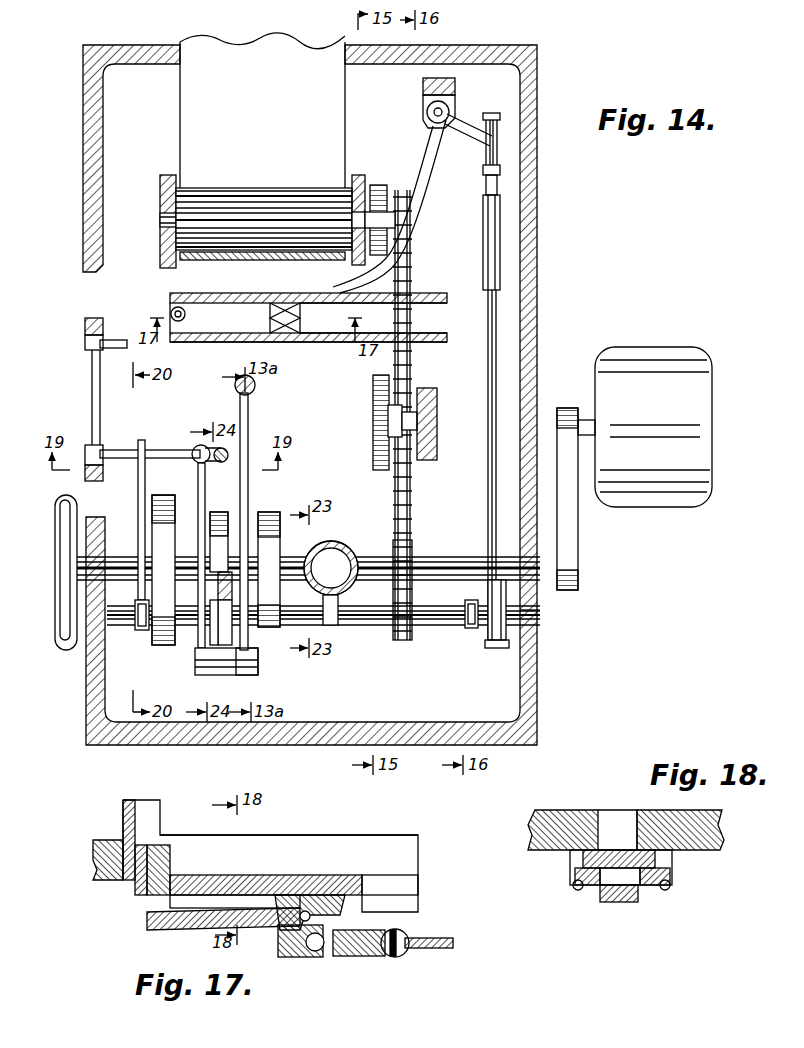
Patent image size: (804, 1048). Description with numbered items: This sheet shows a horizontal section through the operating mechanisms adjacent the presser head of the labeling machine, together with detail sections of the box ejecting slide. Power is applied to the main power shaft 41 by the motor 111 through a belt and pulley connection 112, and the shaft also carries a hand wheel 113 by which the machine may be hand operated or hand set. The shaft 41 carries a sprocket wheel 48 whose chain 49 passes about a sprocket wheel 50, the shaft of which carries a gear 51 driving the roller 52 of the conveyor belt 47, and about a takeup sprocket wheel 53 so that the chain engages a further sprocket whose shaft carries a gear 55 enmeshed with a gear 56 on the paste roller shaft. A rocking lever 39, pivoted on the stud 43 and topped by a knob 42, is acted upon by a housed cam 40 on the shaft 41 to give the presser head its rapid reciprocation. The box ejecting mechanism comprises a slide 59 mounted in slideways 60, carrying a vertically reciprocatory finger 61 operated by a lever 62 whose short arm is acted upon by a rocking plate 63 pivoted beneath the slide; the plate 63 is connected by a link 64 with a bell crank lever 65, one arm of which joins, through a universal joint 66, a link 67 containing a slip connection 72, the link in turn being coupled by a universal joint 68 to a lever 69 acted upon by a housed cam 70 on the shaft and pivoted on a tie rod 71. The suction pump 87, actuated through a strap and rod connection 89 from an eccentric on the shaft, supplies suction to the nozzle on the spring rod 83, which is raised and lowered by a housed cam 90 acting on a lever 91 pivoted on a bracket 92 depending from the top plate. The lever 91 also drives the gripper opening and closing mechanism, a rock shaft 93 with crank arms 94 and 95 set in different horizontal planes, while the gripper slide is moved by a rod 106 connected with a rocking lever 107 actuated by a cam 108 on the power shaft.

In FIG. 14, the conveyor belt 47 is at (236, 42).
In FIG. 14, the roller 52 is at (236, 190).
In FIG. 14, the gear 51 is at (366, 183).
In FIG. 14, the sprocket wheel 50 is at (388, 193).
In FIG. 14, the chain 49 is at (412, 360).
In FIG. 14, the bell crank lever 65 is at (418, 182).
In FIG. 17, the bell crank lever 65 is at (430, 938).
In FIG. 14, the universal joint 66 is at (500, 142).
In FIG. 14, the slip connection 72 is at (500, 215).
In FIG. 14, the link 67 is at (500, 297).
In FIG. 14, the slide 59 is at (218, 296).
In FIG. 17, the slide 59 is at (210, 876).
In FIG. 18, the slide 59 is at (606, 848).
In FIG. 14, the slideways 60 is at (330, 340).
In FIG. 18, the slideways 60 is at (648, 885).
In FIG. 14, the finger 61 is at (171, 311).
In FIG. 17, the finger 61 is at (135, 890).
In FIG. 14, the lever 62 is at (178, 342).
In FIG. 17, the lever 62 is at (170, 930).
In FIG. 18, the lever 62 is at (618, 902).
In FIG. 14, the rock shaft 93 is at (92, 366).
In FIG. 14, the crank arm 95 is at (118, 340).
In FIG. 14, the crank arm 94 is at (118, 450).
In FIG. 14, the spring rod 83 is at (214, 447).
In FIG. 14, the lever 91 is at (198, 476).
In FIG. 14, the rod 106 is at (138, 494).
In FIG. 14, the rocking lever 107 is at (138, 630).
In FIG. 14, the cam 108 is at (162, 643).
In FIG. 14, the housed cam 90 is at (216, 512).
In FIG. 14, the bracket 92 is at (225, 635).
In FIG. 14, the housed cam 40 is at (268, 512).
In FIG. 14, the rocking lever 39 is at (250, 431).
In FIG. 14, the knob 42 is at (256, 383).
In FIG. 14, the stud 43 is at (258, 670).
In FIG. 14, the main power shaft 41 is at (428, 558).
In FIG. 14, the tie rod 71 is at (440, 628).
In FIG. 14, the suction pump 87 is at (322, 542).
In FIG. 14, the strap and rod connection 89 is at (330, 626).
In FIG. 14, the sprocket wheel 48 is at (412, 600).
In FIG. 14, the lever 69 is at (470, 628).
In FIG. 14, the housed cam 70 is at (496, 648).
In FIG. 14, the universal joint 68 is at (538, 624).
In FIG. 14, the gear 55 is at (373, 452).
In FIG. 14, the gear 56 is at (373, 430).
In FIG. 14, the takeup sprocket wheel 53 is at (437, 447).
In FIG. 14, the hand wheel 113 is at (58, 510).
In FIG. 14, the motor 111 is at (652, 508).
In FIG. 14, the belt and pulley connection 112 is at (578, 546).
In FIG. 17, the rocking plate 63 is at (280, 932).
In FIG. 17, the link 64 is at (350, 956).